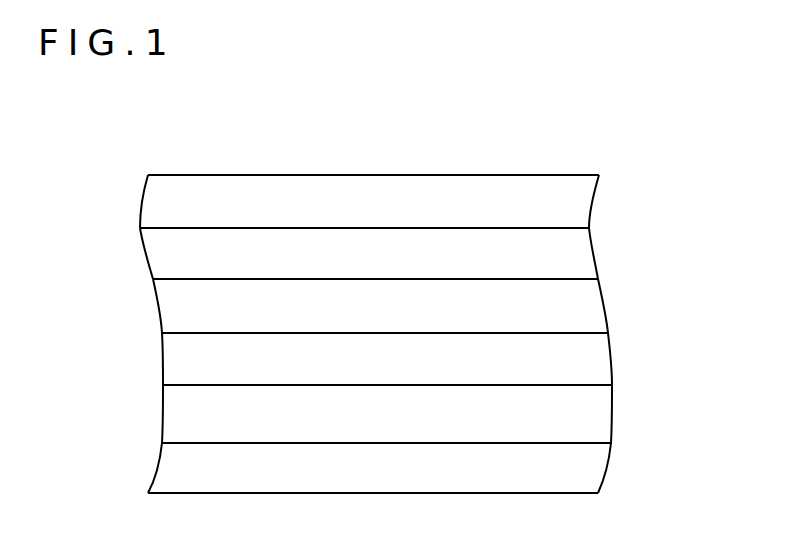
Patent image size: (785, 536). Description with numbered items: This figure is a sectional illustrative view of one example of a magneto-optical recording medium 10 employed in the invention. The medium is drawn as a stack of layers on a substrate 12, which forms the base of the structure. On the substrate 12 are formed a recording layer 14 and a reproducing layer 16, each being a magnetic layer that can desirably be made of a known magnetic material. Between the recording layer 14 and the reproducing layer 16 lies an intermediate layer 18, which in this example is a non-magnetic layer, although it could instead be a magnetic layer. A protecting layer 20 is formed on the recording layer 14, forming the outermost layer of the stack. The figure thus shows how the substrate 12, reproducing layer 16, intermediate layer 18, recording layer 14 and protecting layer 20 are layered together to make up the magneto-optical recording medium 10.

The magneto-optical recording medium 10 is at (99, 146).
The substrate 12 is at (573, 485).
The recording layer 14 is at (577, 260).
The reproducing layer 16 is at (593, 363).
The intermediate layer 18 is at (588, 312).
The protecting layer 20 is at (577, 210).